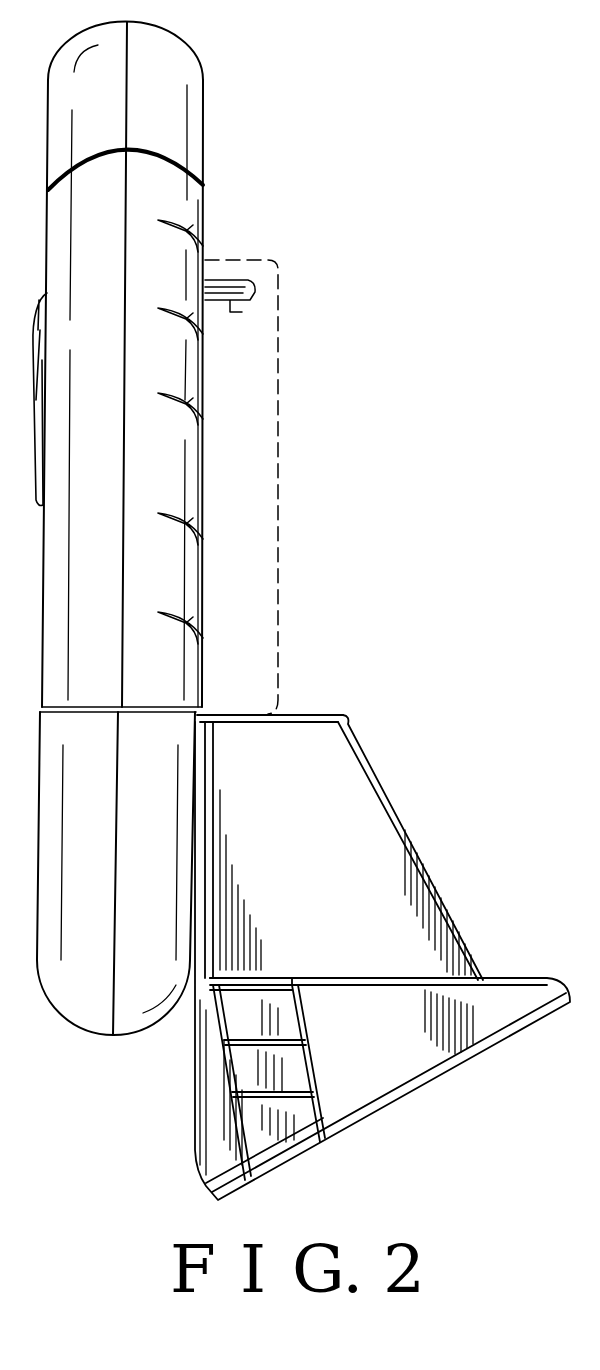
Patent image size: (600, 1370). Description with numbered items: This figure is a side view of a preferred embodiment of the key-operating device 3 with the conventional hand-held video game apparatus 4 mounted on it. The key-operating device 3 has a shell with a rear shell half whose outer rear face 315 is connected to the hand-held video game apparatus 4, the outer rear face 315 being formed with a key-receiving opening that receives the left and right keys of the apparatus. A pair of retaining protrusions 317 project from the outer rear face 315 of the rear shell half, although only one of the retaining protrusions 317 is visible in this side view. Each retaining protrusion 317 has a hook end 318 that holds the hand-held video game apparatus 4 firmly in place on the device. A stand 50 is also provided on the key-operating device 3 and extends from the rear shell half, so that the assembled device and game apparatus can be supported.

The key-operating device 3 is at (252, 138).
The hand-held video game apparatus 4 is at (306, 590).
The outer rear face 315 is at (205, 488).
The retaining protrusion 317 is at (235, 293).
The hook end 318 is at (233, 322).
The stand 50 is at (395, 1103).